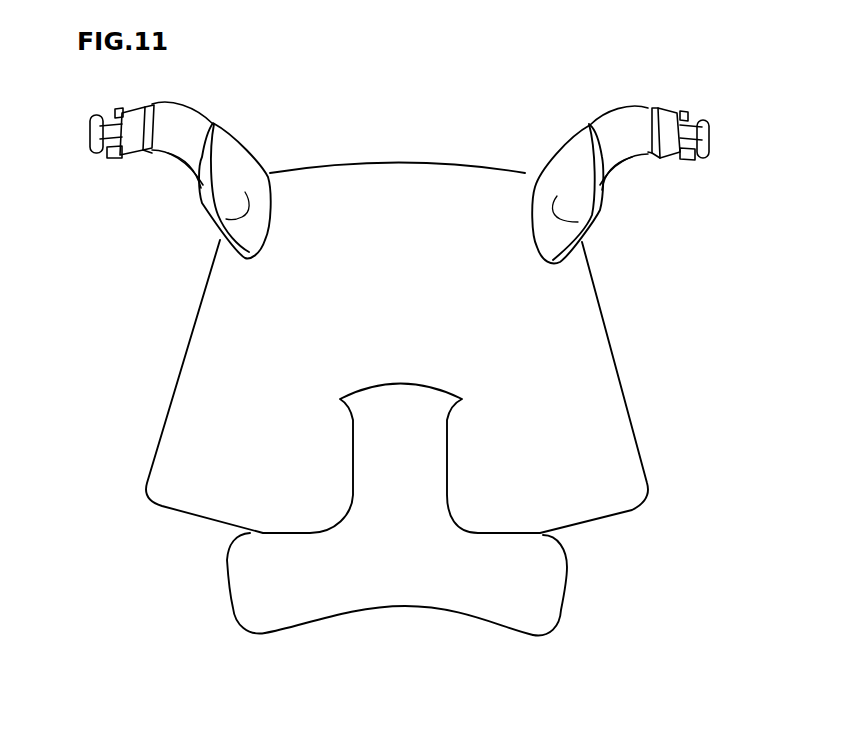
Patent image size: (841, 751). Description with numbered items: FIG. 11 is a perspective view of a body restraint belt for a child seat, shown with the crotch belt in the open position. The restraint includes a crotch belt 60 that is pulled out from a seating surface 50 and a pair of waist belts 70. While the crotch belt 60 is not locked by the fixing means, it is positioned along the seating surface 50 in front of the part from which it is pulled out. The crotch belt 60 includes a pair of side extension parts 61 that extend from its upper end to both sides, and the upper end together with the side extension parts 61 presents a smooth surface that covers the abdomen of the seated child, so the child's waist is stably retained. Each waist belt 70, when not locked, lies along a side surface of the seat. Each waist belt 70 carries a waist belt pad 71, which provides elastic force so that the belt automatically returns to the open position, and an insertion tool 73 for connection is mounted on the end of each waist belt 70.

The seating surface 50 is at (583, 362).
The crotch belt 60 is at (399, 620).
The side extension parts 61 is at (238, 571).
The waist belt 70 is at (215, 108).
The waist belt pad 71 is at (228, 219).
The insertion tool 73 is at (92, 131).